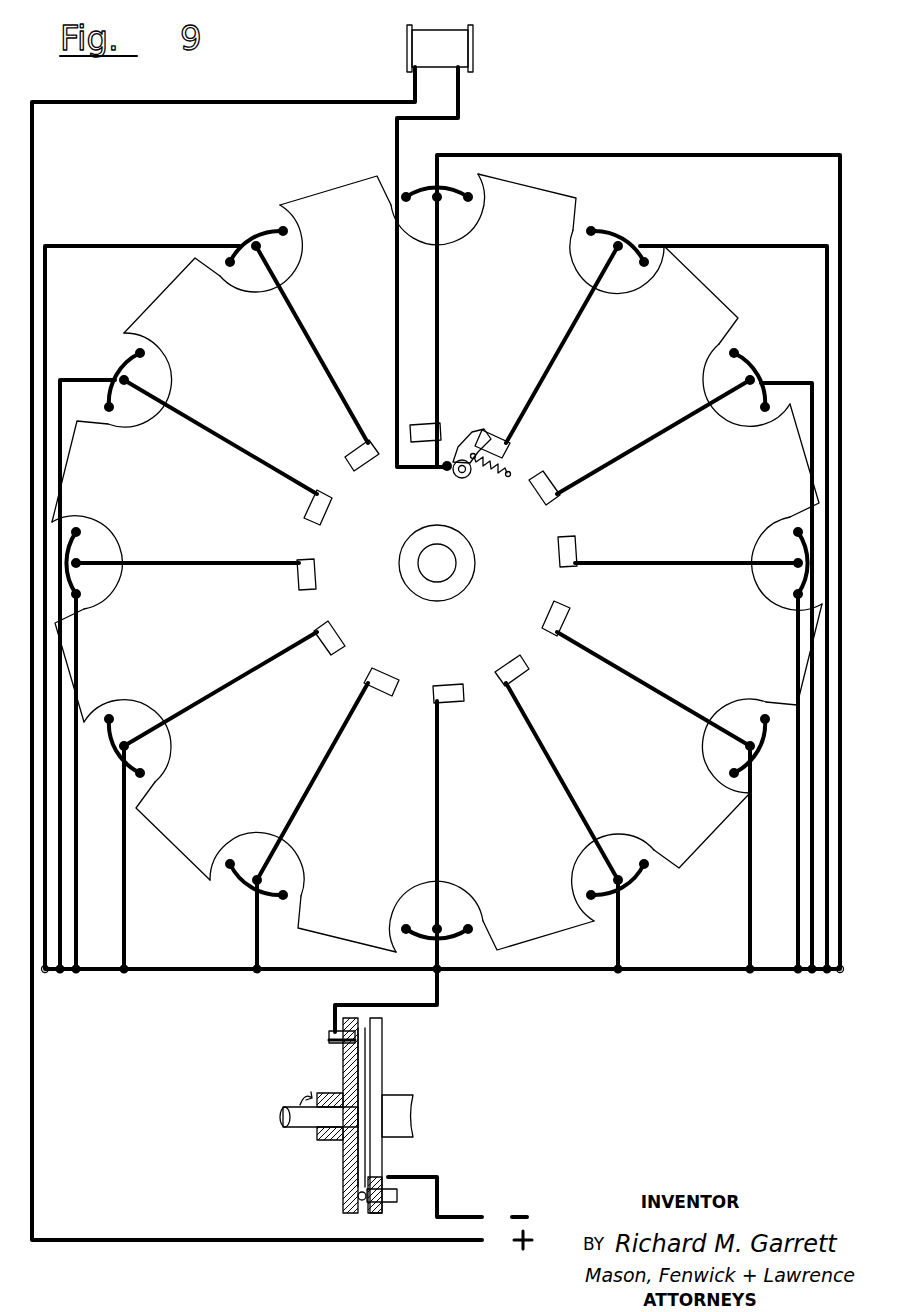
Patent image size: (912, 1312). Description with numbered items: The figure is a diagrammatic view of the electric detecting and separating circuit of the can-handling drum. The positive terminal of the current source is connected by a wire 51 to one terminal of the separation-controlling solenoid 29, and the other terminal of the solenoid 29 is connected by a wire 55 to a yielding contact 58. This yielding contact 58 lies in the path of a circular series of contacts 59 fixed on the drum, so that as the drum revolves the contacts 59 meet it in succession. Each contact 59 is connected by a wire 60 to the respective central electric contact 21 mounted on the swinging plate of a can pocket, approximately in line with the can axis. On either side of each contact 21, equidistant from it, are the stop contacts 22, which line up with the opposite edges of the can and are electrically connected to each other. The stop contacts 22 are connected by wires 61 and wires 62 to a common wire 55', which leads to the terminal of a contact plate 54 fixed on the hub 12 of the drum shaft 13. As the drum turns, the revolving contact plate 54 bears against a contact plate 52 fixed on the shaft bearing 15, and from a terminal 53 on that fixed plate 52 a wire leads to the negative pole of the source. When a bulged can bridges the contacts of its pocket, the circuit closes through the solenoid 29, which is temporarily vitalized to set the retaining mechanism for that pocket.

The separation-controlling solenoid 29 is at (455, 45).
The wire 51 is at (297, 104).
The wire 55 is at (437, 509).
The common wire 55' is at (428, 1000).
The stop contacts 22 is at (598, 230).
The wires 61 is at (628, 235).
The electric contact 21 is at (600, 250).
The wires 60 is at (568, 346).
The contacts 59 is at (556, 480).
The yielding contact 58 is at (466, 436).
The wires 62 is at (745, 243).
The shaft 13 is at (447, 560).
The hub 12 is at (468, 568).
The contact plate 52 is at (376, 1065).
The shaft bearing 15 is at (395, 1102).
The contact plate 54 is at (343, 1063).
The terminal 53 is at (398, 1190).